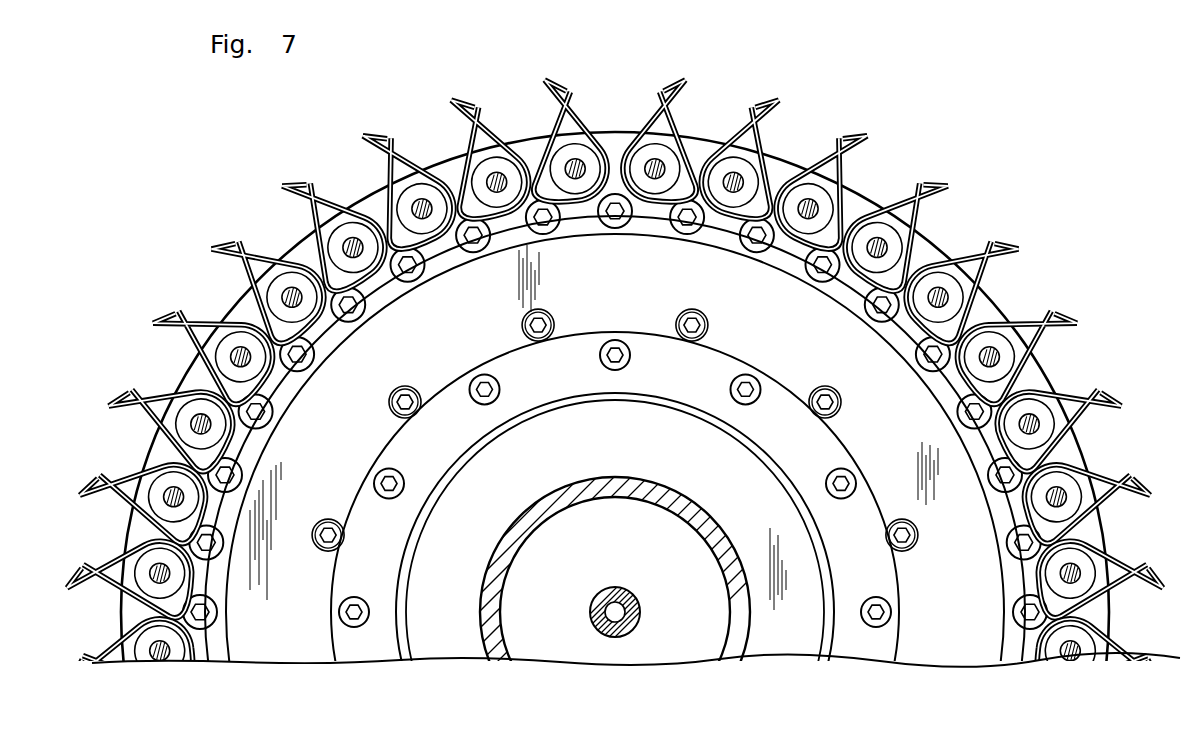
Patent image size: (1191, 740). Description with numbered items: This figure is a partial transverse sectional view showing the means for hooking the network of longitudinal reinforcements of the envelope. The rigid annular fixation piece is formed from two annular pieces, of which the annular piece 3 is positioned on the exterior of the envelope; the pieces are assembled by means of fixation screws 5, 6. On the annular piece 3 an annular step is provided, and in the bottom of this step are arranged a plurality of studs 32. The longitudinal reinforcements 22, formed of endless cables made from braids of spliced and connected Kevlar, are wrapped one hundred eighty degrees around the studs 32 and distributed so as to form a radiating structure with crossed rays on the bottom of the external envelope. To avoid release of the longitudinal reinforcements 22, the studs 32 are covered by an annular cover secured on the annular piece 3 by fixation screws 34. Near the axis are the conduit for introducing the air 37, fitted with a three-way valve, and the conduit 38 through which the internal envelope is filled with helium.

The annular piece 3 is at (198, 378).
The fixation screw 5 is at (271, 414).
The fixation screw 6 is at (409, 391).
The longitudinal reinforcement 22 is at (480, 142).
The stud 32 is at (747, 160).
The fixation screw 34 is at (292, 285).
The conduit for introducing the air 37 is at (697, 493).
The conduit 38 is at (625, 598).